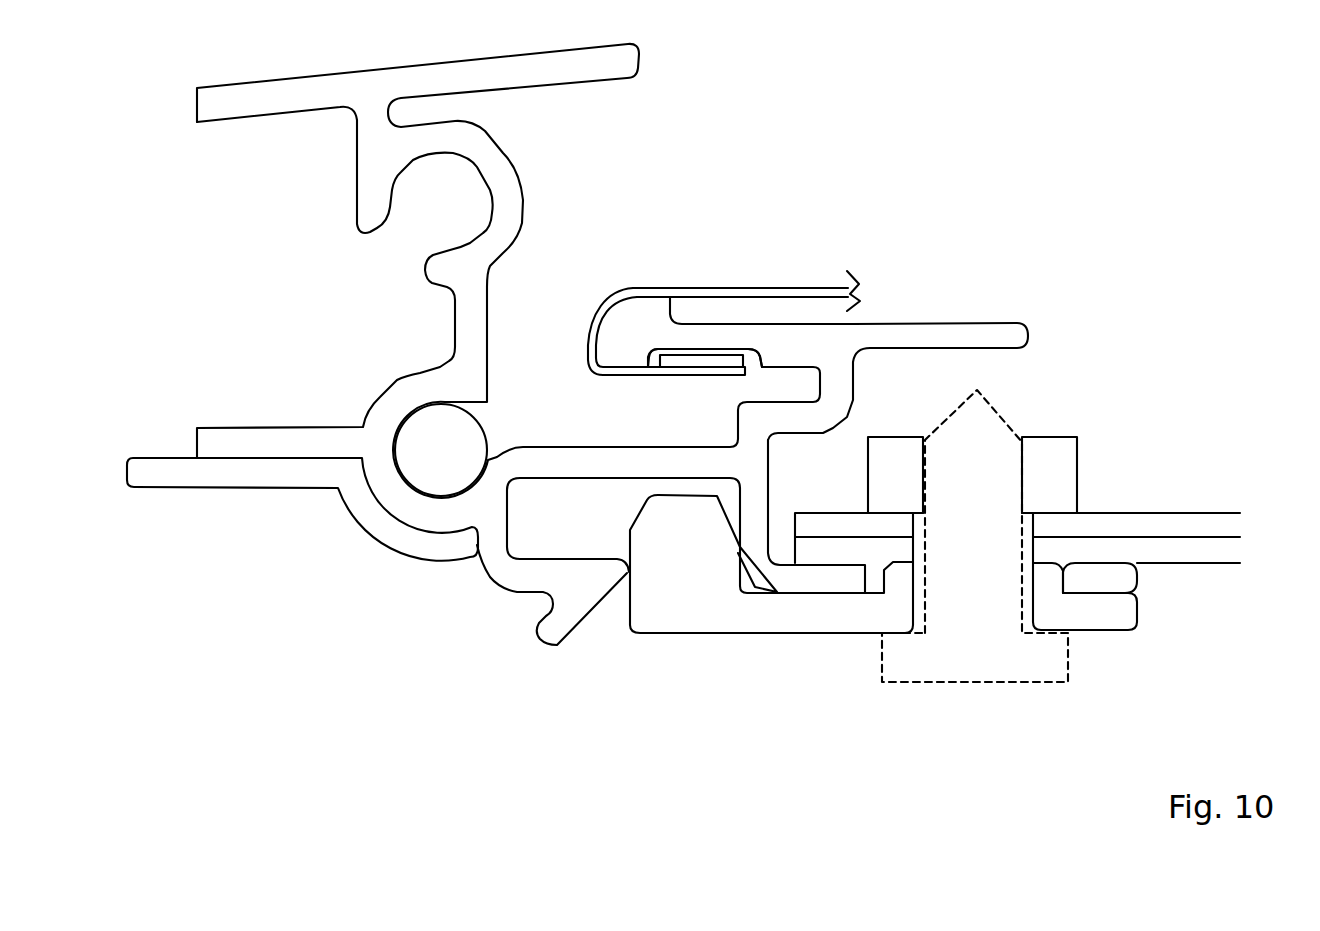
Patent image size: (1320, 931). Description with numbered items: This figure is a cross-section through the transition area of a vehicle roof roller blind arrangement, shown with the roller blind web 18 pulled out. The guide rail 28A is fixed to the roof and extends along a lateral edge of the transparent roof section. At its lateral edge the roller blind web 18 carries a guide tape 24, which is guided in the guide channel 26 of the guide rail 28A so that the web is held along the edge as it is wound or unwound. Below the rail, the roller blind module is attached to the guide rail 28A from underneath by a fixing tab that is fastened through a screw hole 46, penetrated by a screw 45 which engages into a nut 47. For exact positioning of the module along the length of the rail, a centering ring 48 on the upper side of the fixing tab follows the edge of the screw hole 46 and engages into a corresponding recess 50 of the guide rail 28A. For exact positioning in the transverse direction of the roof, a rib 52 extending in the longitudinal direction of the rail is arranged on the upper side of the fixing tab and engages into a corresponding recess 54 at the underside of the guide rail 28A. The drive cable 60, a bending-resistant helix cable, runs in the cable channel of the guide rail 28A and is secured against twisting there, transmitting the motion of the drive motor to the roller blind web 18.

The roller blind web 18 is at (783, 292).
The guide tape 24 is at (680, 360).
The guide channel 26 is at (752, 368).
The guide rail 28A is at (473, 318).
The screw 45 is at (992, 672).
The screw hole 46 is at (913, 593).
The nut 47 is at (1067, 458).
The centering ring 48 is at (1048, 578).
The recess 50 is at (1073, 578).
The rib 52 is at (665, 567).
The recess 54 is at (720, 503).
The drive cable 60 is at (447, 462).